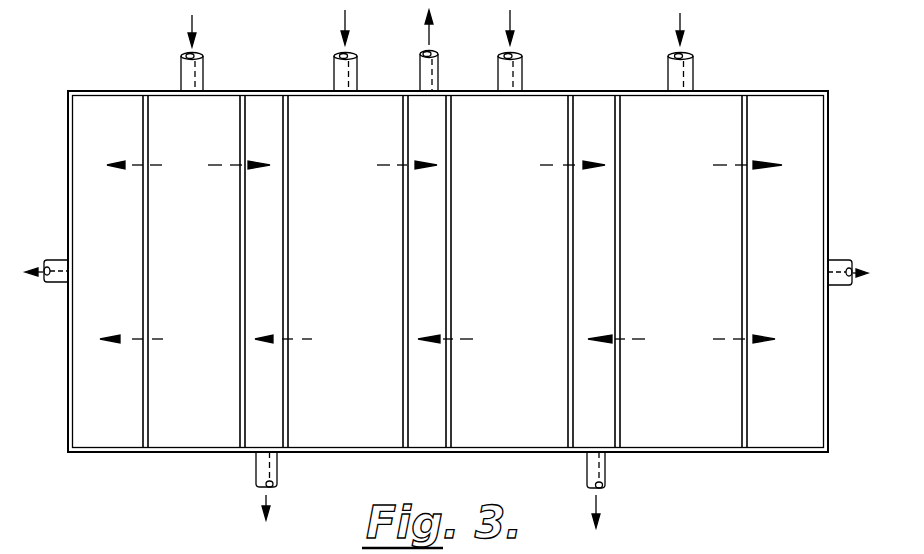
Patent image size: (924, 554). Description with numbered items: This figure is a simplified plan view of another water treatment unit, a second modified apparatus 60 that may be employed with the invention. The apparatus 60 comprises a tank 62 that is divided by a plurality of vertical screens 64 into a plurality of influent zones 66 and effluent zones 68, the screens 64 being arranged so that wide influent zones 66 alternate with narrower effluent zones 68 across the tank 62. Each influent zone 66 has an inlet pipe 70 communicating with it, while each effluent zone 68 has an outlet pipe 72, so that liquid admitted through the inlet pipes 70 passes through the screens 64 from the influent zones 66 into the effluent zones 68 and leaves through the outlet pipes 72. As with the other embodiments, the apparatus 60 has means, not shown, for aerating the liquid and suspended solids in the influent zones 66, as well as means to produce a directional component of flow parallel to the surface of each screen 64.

The second modified apparatus 60 is at (138, 70).
The tank 62 is at (765, 93).
The vertical screens 64 is at (240, 128).
The influent zones 66 is at (444, 222).
The effluent zones 68 is at (446, 299).
The inlet pipe 70 is at (203, 68).
The outlet pipe 72 is at (438, 72).